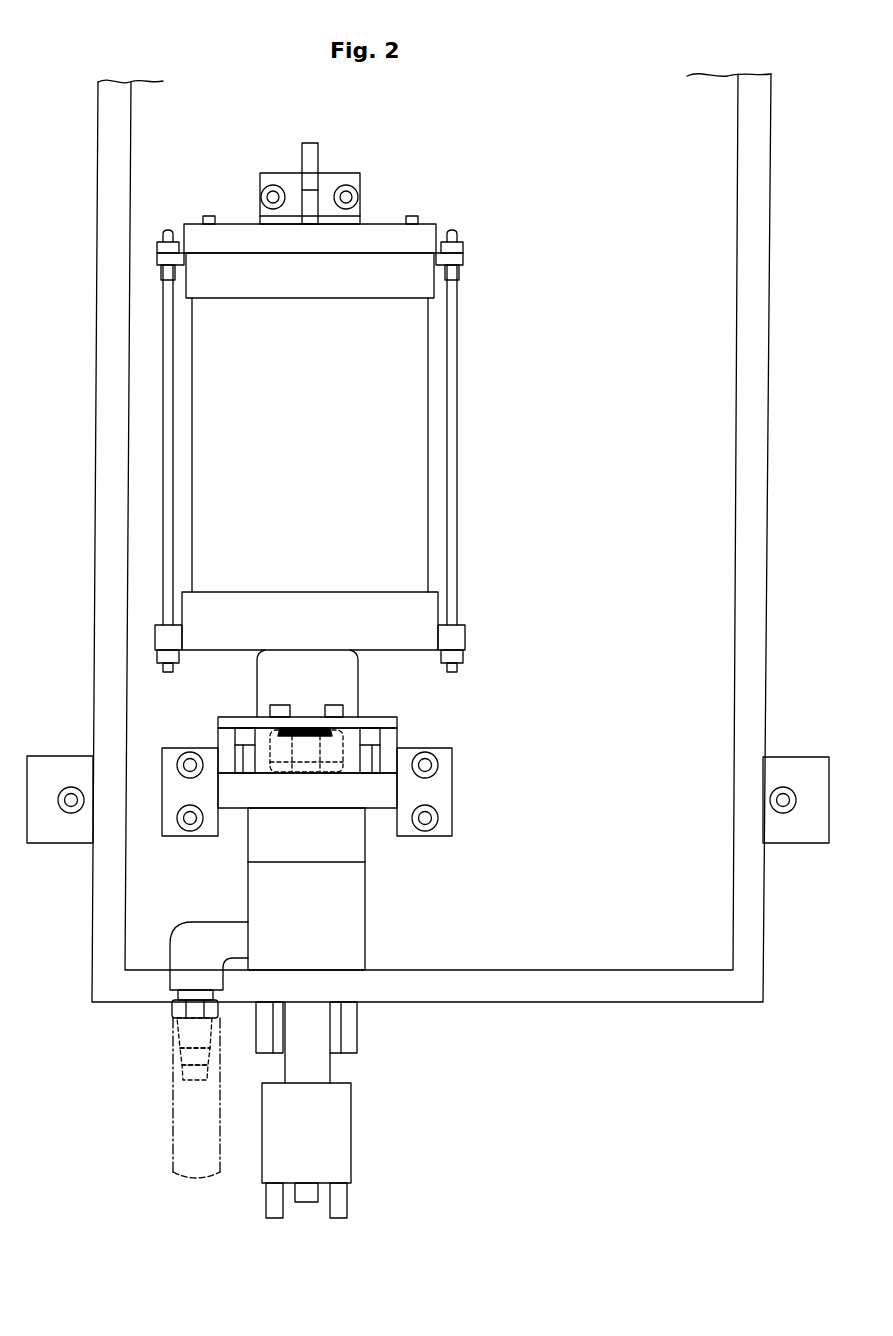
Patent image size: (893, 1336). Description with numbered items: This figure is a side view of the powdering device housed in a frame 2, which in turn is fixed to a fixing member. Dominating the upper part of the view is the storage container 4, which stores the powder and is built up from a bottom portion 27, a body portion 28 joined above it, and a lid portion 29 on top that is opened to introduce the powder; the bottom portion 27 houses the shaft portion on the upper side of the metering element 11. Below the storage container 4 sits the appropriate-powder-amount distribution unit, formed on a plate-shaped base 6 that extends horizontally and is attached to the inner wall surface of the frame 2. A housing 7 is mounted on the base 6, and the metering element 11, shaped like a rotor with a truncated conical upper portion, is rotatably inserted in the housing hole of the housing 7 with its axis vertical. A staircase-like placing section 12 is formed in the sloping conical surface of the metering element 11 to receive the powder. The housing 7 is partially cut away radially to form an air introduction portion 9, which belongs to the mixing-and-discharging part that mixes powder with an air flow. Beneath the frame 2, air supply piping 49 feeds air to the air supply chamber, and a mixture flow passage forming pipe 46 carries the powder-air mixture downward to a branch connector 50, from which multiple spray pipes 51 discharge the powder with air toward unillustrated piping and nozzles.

The frame 2 is at (752, 648).
The storage container 4 is at (363, 407).
The base 6 is at (385, 797).
The housing 7 is at (392, 740).
The air introduction portion 9 is at (315, 748).
The metering element 11 is at (283, 730).
The placing section 12 is at (375, 717).
The bottom portion 27 is at (358, 680).
The body portion 28 is at (426, 553).
The lid portion 29 is at (432, 224).
The mixture flow passage forming pipe 46 is at (317, 1067).
The air supply piping 49 is at (193, 930).
The branch connector 50 is at (338, 1137).
The spray pipes 51 is at (268, 1207).